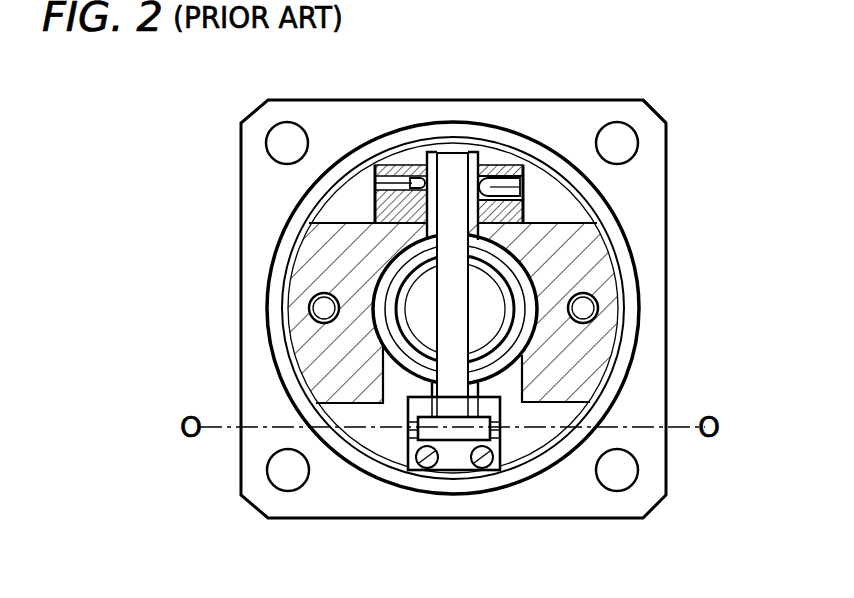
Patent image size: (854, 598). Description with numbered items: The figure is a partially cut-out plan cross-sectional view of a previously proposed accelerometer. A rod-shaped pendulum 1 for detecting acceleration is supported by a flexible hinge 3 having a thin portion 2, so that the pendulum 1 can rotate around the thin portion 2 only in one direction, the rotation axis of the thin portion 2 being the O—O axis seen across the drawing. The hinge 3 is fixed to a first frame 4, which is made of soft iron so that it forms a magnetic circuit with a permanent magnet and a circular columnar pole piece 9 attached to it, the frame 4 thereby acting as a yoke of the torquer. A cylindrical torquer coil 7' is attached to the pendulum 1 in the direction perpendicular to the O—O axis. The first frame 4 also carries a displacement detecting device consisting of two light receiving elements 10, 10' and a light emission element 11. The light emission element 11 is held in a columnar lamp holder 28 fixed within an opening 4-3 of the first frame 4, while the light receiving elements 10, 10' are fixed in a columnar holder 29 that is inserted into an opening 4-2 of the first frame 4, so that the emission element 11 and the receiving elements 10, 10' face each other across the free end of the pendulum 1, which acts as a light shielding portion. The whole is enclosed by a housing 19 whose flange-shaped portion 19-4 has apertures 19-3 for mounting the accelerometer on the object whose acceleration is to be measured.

The pendulum 1 is at (460, 158).
The thin portion 2 is at (495, 432).
The hinge 3 is at (417, 407).
The first frame 4 is at (600, 355).
The opening of the first frame 4-2 is at (395, 210).
The opening of the first frame 4-3 is at (522, 222).
The torquer coil 7' is at (516, 292).
The pole piece 9 is at (420, 290).
The light receiving element 10 is at (422, 113).
The light receiving element 10' is at (499, 187).
The light emission element 11 is at (492, 172).
The housing 19 is at (583, 106).
The apertures 19-3 is at (290, 140).
The flange-shaped portion 19-4 is at (625, 106).
The lamp holder 28 is at (515, 187).
The columnar holder 29 is at (389, 168).